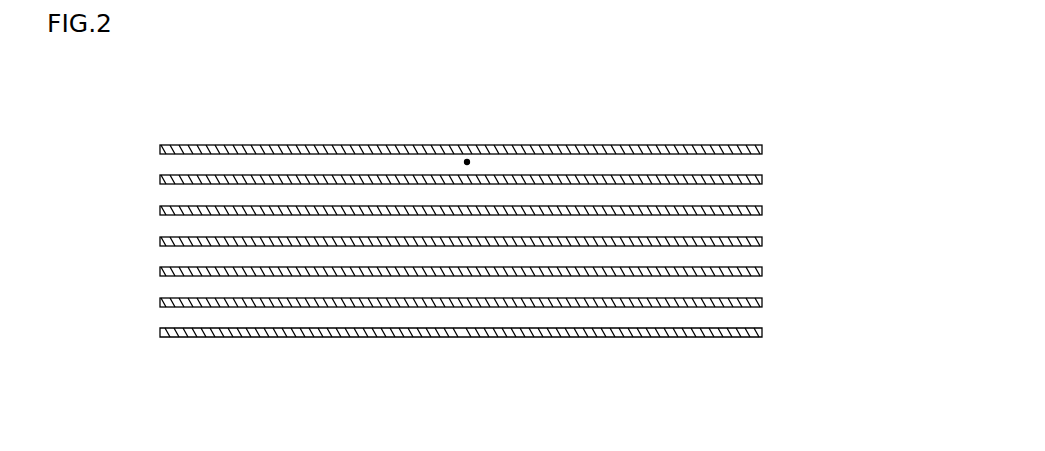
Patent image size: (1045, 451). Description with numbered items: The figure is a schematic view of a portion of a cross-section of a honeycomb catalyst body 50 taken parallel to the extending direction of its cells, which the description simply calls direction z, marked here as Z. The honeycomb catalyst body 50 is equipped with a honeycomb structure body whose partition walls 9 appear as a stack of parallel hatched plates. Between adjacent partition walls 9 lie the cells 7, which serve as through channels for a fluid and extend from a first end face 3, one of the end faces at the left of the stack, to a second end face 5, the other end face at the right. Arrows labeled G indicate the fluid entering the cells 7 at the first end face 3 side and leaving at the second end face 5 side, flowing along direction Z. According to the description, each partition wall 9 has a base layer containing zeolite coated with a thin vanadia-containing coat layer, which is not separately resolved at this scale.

The honeycomb catalyst body 50 is at (703, 70).
The partition walls 9 is at (302, 148).
The cells 7 is at (467, 160).
The first end face 3 is at (158, 330).
The second end face 5 is at (760, 336).
The gas flow G is at (173, 163).
The direction z Z is at (537, 368).